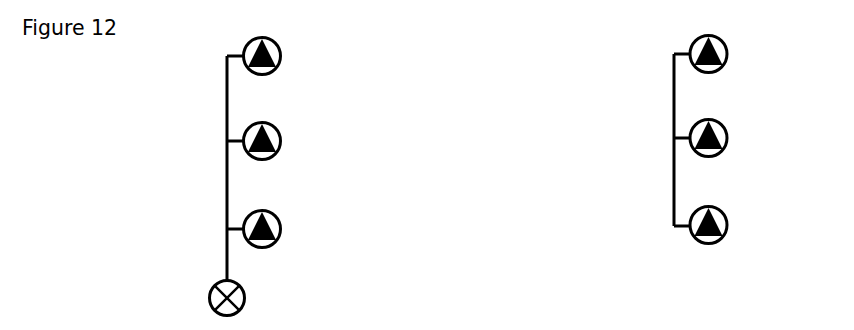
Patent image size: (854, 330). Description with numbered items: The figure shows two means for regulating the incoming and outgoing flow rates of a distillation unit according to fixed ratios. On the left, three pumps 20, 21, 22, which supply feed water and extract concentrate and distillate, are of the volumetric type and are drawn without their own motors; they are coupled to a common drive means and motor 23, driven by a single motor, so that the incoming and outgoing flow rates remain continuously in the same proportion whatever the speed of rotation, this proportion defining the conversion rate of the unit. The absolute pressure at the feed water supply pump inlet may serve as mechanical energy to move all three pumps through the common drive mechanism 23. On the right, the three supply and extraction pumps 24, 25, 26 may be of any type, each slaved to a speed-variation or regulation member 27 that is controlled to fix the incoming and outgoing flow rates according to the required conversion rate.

The pump supplying feed water 20 is at (305, 72).
The pump extracting concentrate 21 is at (305, 141).
The pump extracting distillate 22 is at (305, 226).
The common drive means and motor 23 is at (193, 186).
The pump supplying feed water 24 is at (751, 69).
The pump extracting concentrate 25 is at (751, 138).
The pump extracting distillate 26 is at (752, 223).
The regulation member 27 is at (639, 166).